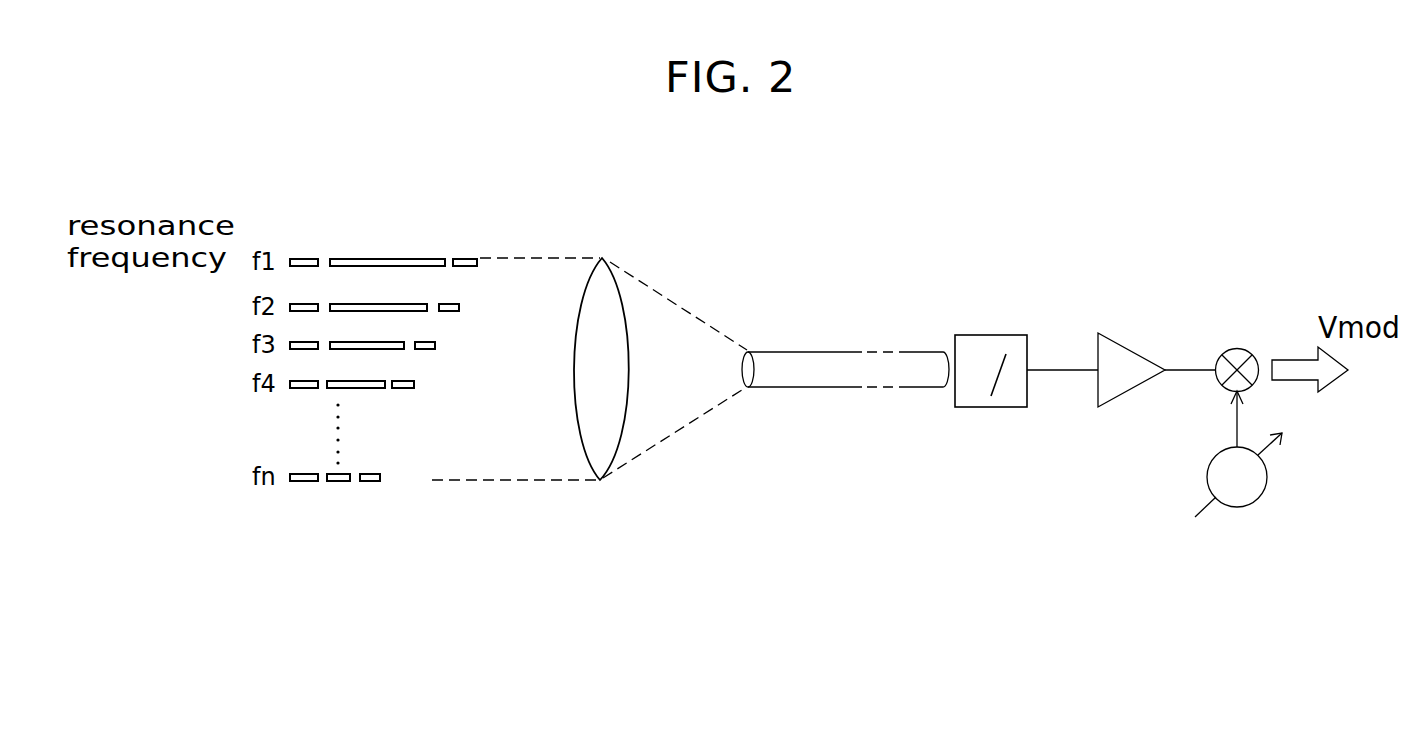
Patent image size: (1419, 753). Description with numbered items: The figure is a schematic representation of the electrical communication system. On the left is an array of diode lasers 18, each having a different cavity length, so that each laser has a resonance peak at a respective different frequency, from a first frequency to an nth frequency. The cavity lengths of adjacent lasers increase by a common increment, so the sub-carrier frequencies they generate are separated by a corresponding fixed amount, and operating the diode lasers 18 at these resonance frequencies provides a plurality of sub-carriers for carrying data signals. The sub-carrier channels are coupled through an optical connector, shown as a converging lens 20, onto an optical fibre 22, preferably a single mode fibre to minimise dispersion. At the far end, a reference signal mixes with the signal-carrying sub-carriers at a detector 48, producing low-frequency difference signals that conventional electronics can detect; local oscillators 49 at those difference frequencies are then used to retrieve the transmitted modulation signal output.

The diode lasers 18 is at (386, 459).
The converging lens 20 is at (618, 263).
The optical fibre 22 is at (842, 352).
The detector 48 is at (988, 407).
The local oscillators 49 is at (1232, 507).